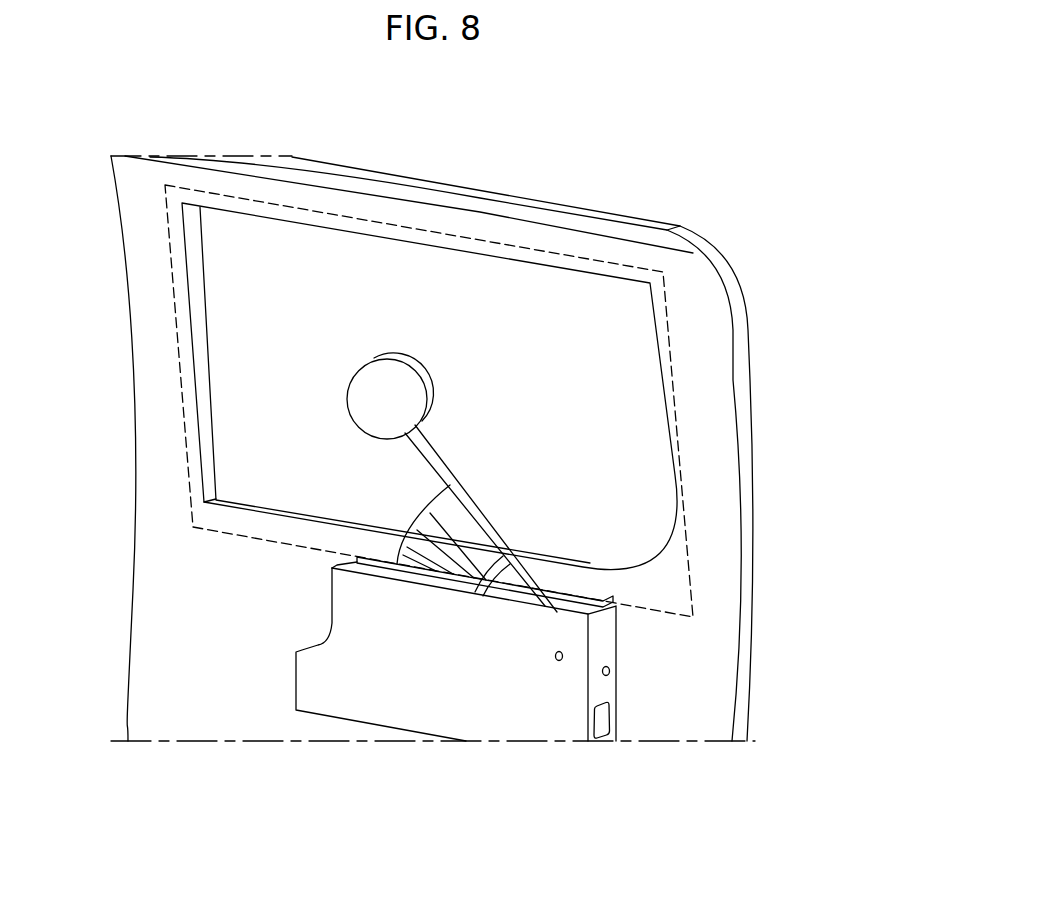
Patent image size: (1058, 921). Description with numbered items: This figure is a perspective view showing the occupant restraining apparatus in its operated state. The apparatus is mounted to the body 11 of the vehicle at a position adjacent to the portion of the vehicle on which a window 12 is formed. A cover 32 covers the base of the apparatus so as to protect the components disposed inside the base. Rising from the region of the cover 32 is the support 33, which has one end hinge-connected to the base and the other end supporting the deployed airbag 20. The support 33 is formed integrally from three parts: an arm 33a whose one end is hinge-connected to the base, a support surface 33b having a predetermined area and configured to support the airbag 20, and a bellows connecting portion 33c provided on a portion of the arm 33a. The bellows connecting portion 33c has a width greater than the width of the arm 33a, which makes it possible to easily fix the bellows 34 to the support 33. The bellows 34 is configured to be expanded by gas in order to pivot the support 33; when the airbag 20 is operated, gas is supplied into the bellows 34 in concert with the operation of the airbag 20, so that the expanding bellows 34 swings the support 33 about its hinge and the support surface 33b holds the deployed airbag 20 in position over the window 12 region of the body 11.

The body 11 is at (706, 346).
The window 12 is at (563, 303).
The airbag 20 is at (320, 212).
The cover 32 is at (398, 697).
The support 33 is at (641, 482).
The arm 33a is at (523, 588).
The support surface 33b is at (405, 400).
The bellows connecting portion 33c is at (482, 516).
The bellows 34 is at (425, 525).